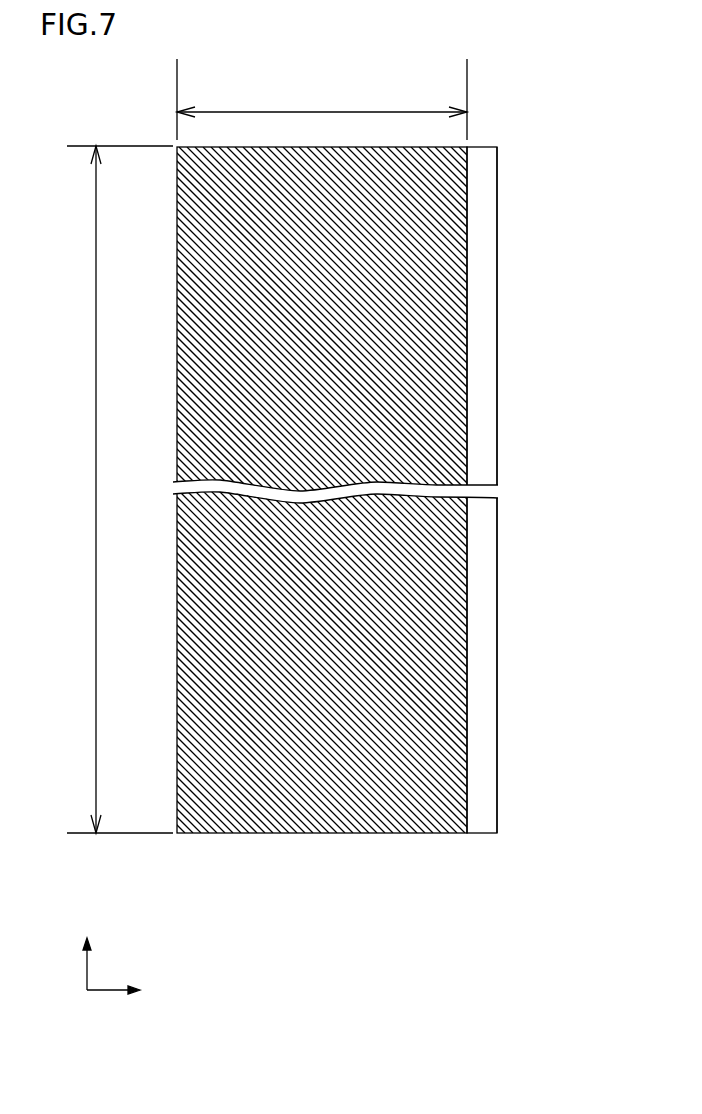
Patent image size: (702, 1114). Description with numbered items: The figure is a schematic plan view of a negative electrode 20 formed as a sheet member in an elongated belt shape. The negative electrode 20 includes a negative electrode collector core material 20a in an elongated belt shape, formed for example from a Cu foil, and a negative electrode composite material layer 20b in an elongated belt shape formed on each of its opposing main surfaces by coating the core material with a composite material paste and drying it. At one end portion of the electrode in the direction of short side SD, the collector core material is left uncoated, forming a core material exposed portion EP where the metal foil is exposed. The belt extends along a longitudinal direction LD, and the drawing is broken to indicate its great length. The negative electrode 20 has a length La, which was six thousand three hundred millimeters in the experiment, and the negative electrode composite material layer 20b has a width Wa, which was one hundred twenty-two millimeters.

The negative electrode 20 is at (351, 540).
The negative electrode collector core material 20a is at (481, 523).
The negative electrode composite material layer 20b is at (283, 822).
The core material exposed portion EP is at (478, 318).
The width of negative electrode composite material layer Wa is at (322, 99).
The length of negative electrode La is at (118, 489).
The longitudinal direction LD is at (85, 968).
The direction of short side SD is at (107, 993).